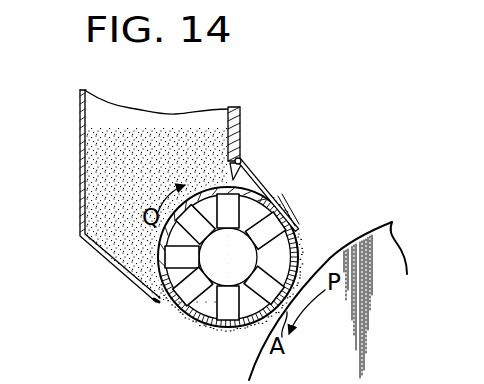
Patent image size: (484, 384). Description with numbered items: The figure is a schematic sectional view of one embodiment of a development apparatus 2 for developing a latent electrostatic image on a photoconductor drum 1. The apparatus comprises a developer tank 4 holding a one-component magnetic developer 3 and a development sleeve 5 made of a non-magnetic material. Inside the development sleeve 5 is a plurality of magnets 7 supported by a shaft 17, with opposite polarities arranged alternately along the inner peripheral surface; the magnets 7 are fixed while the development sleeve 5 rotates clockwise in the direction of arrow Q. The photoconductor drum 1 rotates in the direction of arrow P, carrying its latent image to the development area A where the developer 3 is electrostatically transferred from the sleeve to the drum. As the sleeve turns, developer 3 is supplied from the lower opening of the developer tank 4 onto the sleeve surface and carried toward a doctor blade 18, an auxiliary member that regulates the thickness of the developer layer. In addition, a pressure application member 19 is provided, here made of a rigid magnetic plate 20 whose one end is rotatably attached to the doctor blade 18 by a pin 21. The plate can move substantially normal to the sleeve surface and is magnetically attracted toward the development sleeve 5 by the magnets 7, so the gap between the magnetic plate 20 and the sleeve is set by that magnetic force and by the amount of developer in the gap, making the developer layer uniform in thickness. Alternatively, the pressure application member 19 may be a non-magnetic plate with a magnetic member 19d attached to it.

The photoconductor drum 1 is at (249, 378).
The development apparatus 2 is at (136, 210).
The magnetic developer 3 is at (140, 146).
The developer tank 4 is at (82, 197).
The development sleeve 5 is at (183, 318).
The magnets 7 is at (196, 257).
The shaft 17 is at (201, 321).
The doctor blade 18 is at (228, 125).
The pressure application member 19 is at (317, 187).
The magnetic member 19d is at (292, 207).
The rigid magnetic plate 20 is at (295, 179).
The pin 21 is at (241, 159).